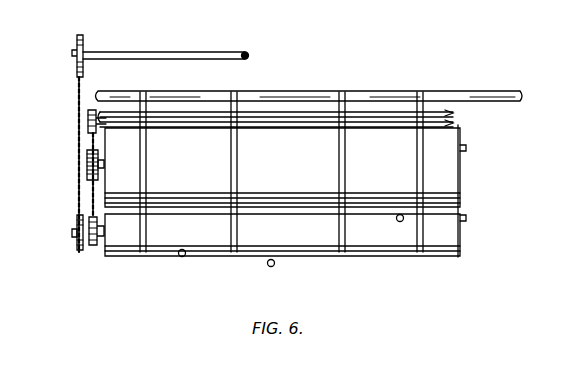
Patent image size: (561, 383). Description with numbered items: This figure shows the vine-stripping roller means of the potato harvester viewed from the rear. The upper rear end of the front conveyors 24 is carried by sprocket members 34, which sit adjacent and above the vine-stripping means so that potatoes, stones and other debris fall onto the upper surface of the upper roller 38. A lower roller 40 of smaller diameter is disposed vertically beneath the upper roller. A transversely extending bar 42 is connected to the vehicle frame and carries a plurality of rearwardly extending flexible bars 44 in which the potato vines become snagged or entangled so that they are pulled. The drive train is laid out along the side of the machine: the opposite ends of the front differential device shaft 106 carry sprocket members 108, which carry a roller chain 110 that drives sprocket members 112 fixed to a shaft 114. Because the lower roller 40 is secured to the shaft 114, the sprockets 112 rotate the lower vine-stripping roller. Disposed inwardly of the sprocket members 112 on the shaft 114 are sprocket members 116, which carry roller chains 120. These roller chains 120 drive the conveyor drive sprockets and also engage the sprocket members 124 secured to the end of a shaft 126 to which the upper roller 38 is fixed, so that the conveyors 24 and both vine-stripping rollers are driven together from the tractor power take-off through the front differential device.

The front conveyor 24 is at (380, 110).
The sprocket member 34 is at (87, 121).
The upper roller 38 is at (458, 148).
The lower roller 40 is at (386, 253).
The transversely extending bar 42 is at (311, 92).
The flexible bar 44 is at (230, 165).
The front differential device shaft 106 is at (183, 52).
The sprocket member 108 is at (76, 46).
The roller chain 110 is at (78, 87).
The sprocket member 112 is at (77, 222).
The shaft 114 is at (72, 234).
The sprocket member 116 is at (102, 227).
The roller chain 120 is at (80, 190).
The sprocket member 124 is at (87, 160).
The shaft 126 is at (104, 165).